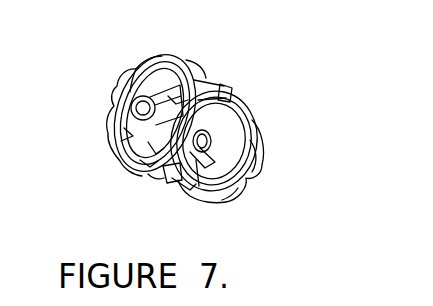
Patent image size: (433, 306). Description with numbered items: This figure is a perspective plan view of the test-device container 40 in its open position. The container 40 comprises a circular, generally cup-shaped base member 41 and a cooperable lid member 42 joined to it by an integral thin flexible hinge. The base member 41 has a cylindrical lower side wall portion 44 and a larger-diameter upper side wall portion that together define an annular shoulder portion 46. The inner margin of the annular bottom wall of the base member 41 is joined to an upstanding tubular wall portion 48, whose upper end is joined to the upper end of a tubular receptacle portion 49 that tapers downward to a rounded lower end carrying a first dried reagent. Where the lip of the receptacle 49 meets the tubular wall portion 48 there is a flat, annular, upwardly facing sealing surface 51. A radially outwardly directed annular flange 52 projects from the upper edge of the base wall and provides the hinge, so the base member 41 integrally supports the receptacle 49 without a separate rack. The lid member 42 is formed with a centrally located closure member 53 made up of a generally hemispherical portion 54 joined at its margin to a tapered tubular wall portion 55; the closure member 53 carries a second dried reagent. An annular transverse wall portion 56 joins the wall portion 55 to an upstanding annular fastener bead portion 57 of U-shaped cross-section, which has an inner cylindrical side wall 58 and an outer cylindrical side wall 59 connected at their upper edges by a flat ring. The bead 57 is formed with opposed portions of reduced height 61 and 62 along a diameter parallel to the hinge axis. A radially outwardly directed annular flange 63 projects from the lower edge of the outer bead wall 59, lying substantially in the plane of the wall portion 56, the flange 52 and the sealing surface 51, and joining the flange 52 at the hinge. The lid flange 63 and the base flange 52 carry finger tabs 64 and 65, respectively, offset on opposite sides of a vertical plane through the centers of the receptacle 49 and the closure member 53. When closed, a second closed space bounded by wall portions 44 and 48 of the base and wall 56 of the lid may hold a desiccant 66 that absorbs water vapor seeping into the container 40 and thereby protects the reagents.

The container 40 is at (114, 125).
The base member 41 is at (205, 70).
The lid member 42 is at (256, 138).
The cylindrical lower side wall portion 44 is at (128, 131).
The annular shoulder portion 46 is at (128, 120).
The upstanding tubular wall portion 48 is at (136, 148).
The tubular receptacle portion 49 is at (131, 106).
The sealing surface 51 is at (146, 92).
The annular flange 52 is at (177, 58).
The closure member 53 is at (214, 114).
The hemispherical portion 54 is at (206, 166).
The tapered tubular wall portion 55 is at (217, 143).
The annular transverse wall portion 56 is at (171, 172).
The fastener bead portion 57 is at (252, 111).
The inner cylindrical side wall 58 is at (155, 178).
The outer cylindrical side wall 59 is at (260, 162).
The portion of reduced height 61 is at (172, 178).
The portion of reduced height 62 is at (239, 93).
The annular flange 63 is at (242, 153).
The finger tab 64 is at (231, 198).
The finger tab 65 is at (134, 68).
The desiccant 66 is at (143, 162).